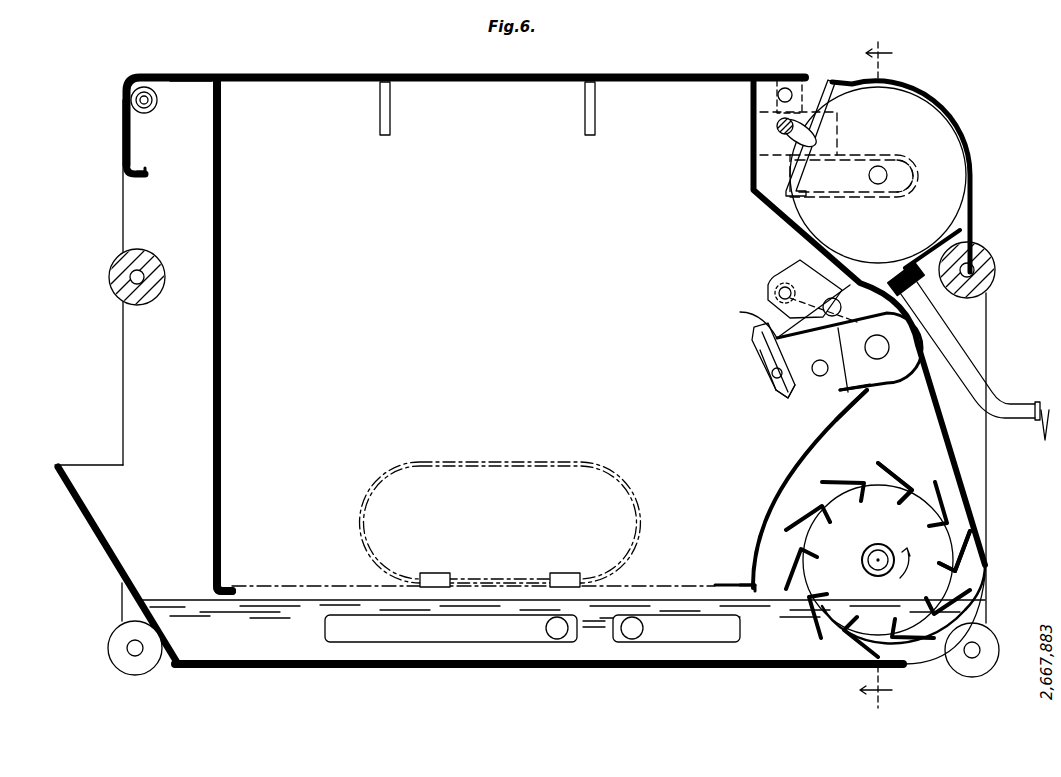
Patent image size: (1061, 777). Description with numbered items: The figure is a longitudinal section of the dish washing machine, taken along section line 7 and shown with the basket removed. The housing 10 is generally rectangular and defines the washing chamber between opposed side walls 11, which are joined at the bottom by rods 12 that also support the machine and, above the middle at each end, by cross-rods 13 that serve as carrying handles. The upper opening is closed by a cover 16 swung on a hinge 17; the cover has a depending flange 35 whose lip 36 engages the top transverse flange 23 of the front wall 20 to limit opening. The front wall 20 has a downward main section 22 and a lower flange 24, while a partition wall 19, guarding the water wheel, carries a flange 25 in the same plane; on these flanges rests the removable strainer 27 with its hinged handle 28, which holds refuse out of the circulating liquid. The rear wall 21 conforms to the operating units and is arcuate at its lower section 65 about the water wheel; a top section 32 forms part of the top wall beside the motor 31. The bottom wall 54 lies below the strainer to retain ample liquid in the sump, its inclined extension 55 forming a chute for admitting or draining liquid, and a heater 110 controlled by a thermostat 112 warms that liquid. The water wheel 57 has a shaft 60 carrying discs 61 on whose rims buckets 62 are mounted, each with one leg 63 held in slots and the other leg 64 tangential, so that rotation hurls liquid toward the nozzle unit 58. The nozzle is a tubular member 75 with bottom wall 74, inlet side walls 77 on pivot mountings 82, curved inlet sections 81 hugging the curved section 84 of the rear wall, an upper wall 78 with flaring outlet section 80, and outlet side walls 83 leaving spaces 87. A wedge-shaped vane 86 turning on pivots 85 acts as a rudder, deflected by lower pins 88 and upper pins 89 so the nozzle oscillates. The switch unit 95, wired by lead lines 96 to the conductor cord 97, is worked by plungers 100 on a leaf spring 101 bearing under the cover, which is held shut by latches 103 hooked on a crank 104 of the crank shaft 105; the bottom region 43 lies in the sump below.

The section line 7- 7 is at (876, 375).
The housing 10 is at (114, 439).
The side walls 11 is at (122, 385).
The rods 12 is at (108, 650).
The cross-rods 13 is at (112, 278).
The cover 16 is at (374, 76).
The hinge 17 is at (131, 100).
The partition wall 19 is at (776, 492).
The front wall 20 is at (229, 435).
The rear wall 21 is at (782, 217).
The main section 22 is at (212, 195).
The top transverse flange 23 is at (175, 85).
The lower flange 24 is at (224, 596).
The flange 25 is at (757, 594).
The strainer 27 is at (286, 583).
The hinged handle 28 is at (440, 461).
The motor 31 is at (950, 170).
The top section 32 is at (848, 80).
The depending flange 35 is at (132, 151).
The lip 36 is at (137, 178).
The tank bottom 43 is at (276, 656).
The bottom wall 54 is at (495, 669).
The inclined extension 55 is at (80, 522).
The water wheel 57 is at (966, 576).
The nozzle unit 58 is at (840, 408).
The shaft 60 is at (878, 550).
The discs 61 is at (812, 512).
The buckets 62 is at (946, 492).
The leg 63 is at (962, 530).
The leg 64 is at (966, 550).
The lower section 65 is at (968, 607).
The bottom wall 74 is at (856, 388).
The tubular member 75 is at (835, 298).
The side walls 77 is at (902, 337).
The upper wall 78 is at (746, 318).
The flaring outlet section 80 is at (753, 333).
The inlet sections 81 is at (905, 372).
The pivot mountings 82 is at (878, 360).
The side walls 83 is at (786, 396).
The curved section 84 is at (916, 312).
The pivots 85 is at (772, 371).
The vane 86 is at (770, 378).
The spaces 87 is at (838, 358).
The lower pins 88 is at (819, 377).
The upper pins 89 is at (800, 282).
The switch unit 95 is at (833, 136).
The lead lines 96 is at (1044, 436).
The conductor cord 97 is at (1003, 412).
The plungers 100 is at (805, 186).
The leaf spring 101 is at (866, 156).
The latches 103 is at (790, 80).
The crank 104 is at (777, 96).
The crank shaft 105 is at (776, 127).
The electric heater 110 is at (414, 638).
The thermostat 112 is at (702, 638).